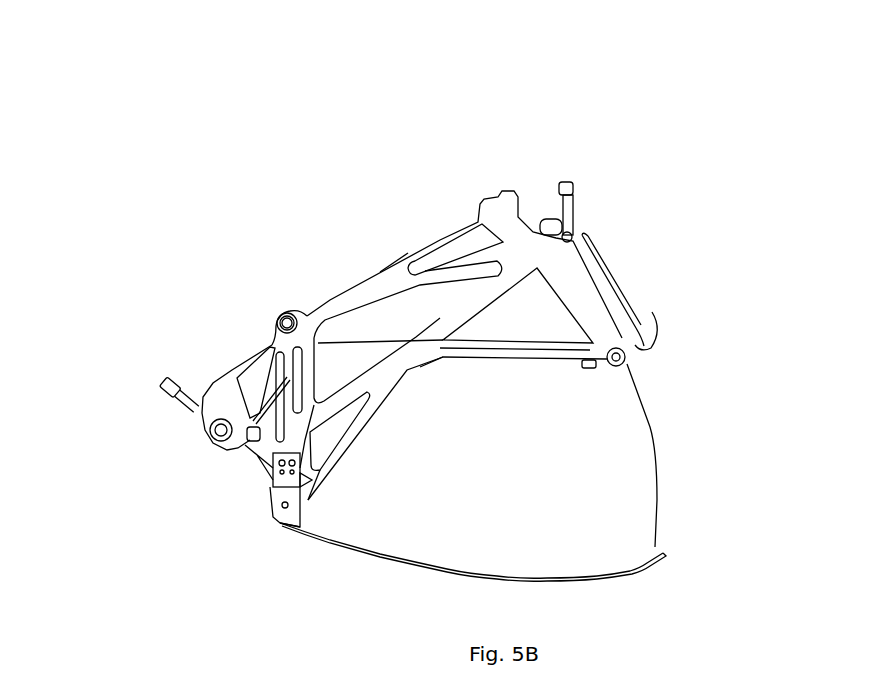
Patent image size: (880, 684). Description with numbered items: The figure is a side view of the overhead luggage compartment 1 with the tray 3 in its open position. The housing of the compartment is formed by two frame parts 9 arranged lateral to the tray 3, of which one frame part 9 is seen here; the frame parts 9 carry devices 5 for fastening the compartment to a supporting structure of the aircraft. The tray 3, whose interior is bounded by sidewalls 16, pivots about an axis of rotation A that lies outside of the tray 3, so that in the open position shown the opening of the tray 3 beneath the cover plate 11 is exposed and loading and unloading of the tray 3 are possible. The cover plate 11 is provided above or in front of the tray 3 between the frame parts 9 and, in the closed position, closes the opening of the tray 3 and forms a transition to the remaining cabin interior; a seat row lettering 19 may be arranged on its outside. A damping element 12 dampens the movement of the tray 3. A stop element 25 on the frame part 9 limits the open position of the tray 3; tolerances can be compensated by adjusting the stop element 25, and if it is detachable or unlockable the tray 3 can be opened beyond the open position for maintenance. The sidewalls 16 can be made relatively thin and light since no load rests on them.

The overhead luggage compartment 1 is at (656, 226).
The tray 3 is at (610, 425).
The devices for fastening 5 is at (569, 181).
The frame part 9 is at (380, 287).
The cover plate 11 is at (624, 299).
The damping element 12 is at (283, 375).
The sidewall 16 is at (613, 455).
The seat row lettering 19 is at (647, 343).
The stop element 25 is at (628, 359).
The axis of rotation A is at (283, 520).